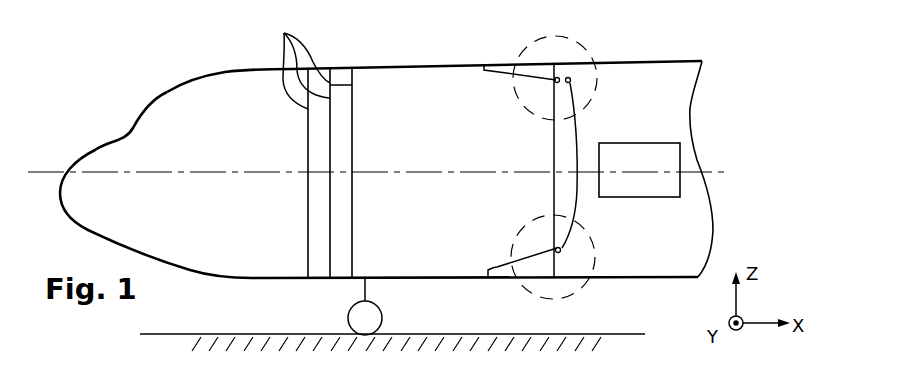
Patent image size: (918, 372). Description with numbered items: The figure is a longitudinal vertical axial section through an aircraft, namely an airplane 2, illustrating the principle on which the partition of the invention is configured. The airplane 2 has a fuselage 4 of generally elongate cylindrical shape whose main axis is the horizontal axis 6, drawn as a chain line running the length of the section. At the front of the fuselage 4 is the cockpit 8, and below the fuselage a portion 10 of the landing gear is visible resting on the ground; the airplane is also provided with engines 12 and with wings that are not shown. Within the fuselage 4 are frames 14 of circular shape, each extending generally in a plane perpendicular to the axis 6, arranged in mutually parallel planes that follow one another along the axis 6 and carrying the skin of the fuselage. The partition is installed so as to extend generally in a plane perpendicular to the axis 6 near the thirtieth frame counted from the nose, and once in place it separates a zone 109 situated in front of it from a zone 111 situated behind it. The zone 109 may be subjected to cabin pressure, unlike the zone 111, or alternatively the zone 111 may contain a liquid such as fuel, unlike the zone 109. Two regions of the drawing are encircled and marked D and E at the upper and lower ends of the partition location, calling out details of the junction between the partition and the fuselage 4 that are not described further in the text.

The airplane 2 is at (114, 79).
The fuselage 4 is at (451, 278).
The horizontal axis 6 is at (113, 173).
The cockpit 8 is at (163, 96).
The portion of landing gear 10 is at (347, 322).
The engines 12 is at (656, 142).
The frames 14 is at (293, 62).
The zone in front of the partition 109 is at (440, 104).
The zone behind the partition 111 is at (663, 80).
The upper hinge detail D is at (573, 40).
The lower hinge detail E is at (568, 298).